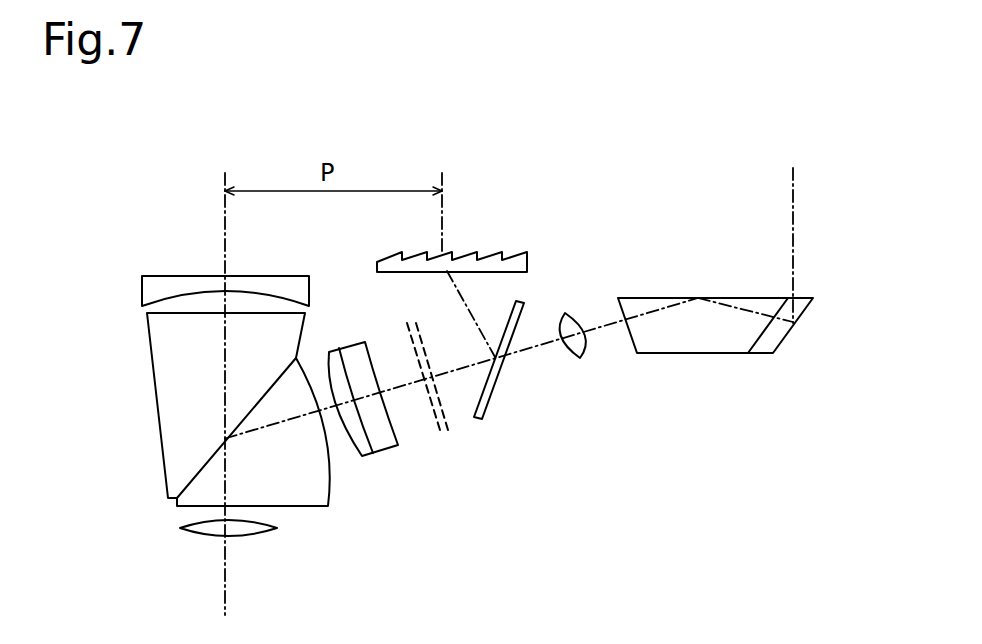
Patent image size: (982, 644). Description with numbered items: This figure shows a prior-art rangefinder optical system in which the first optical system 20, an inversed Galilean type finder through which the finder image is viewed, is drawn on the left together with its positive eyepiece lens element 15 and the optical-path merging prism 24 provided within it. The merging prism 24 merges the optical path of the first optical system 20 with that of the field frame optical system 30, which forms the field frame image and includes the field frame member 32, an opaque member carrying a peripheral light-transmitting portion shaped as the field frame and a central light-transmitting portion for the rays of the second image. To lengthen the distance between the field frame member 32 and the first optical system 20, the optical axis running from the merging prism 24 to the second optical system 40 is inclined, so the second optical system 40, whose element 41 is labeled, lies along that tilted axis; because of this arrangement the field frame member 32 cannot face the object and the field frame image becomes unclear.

The positive eyepiece lens element 15 is at (205, 566).
The first optical system 20 is at (185, 439).
The optical-path merging prism 24 is at (180, 472).
The field frame optical system 30 is at (505, 172).
The field frame member 32 is at (445, 437).
The second optical system 40 is at (667, 302).
The reflecting surface 41 is at (703, 325).